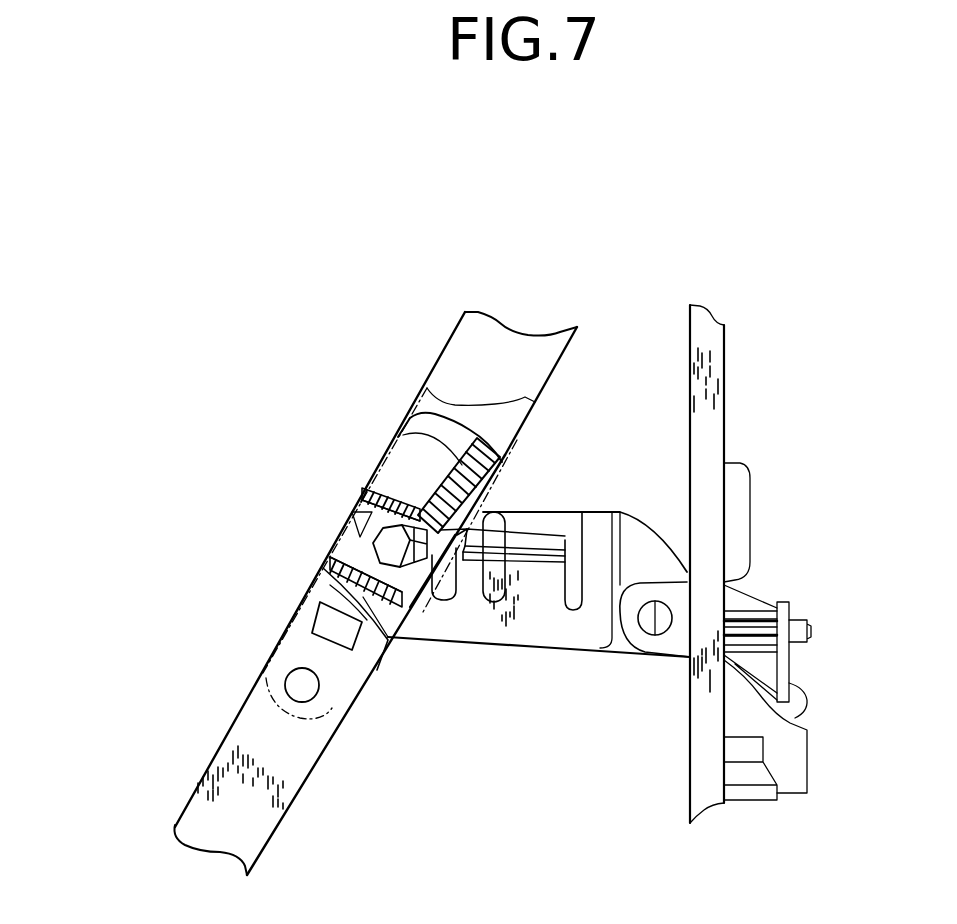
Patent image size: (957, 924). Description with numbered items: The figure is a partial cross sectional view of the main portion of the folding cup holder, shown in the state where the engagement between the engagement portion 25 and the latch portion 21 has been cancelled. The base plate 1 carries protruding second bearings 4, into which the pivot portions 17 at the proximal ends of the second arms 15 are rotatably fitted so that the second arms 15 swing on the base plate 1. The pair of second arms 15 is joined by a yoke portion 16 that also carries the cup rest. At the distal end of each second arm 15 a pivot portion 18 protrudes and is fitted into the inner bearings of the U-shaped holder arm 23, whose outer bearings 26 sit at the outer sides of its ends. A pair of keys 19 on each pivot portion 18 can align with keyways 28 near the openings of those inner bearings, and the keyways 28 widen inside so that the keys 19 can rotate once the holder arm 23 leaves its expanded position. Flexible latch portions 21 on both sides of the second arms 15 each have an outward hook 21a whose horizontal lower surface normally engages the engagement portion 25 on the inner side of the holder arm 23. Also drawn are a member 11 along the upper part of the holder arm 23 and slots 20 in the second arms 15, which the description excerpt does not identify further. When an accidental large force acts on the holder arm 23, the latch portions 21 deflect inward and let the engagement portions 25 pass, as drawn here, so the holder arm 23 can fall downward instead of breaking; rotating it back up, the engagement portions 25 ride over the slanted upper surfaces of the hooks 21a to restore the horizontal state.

The base plate 1 is at (713, 351).
The second bearings 4 is at (727, 584).
The upper strip / arm 11 is at (500, 338).
The holder arm 23 is at (195, 790).
The bearings 26 is at (285, 683).
The engagement portion 25 is at (402, 428).
The keys 19 is at (380, 488).
The pivot portion 18 is at (358, 517).
The keyways 28 is at (417, 622).
The second arms 15 is at (472, 645).
The yoke portion 16 is at (643, 533).
The slots 20 is at (437, 605).
The latch portion 21 is at (520, 582).
The hook 21a is at (542, 540).
The pivot portion 17 is at (642, 634).